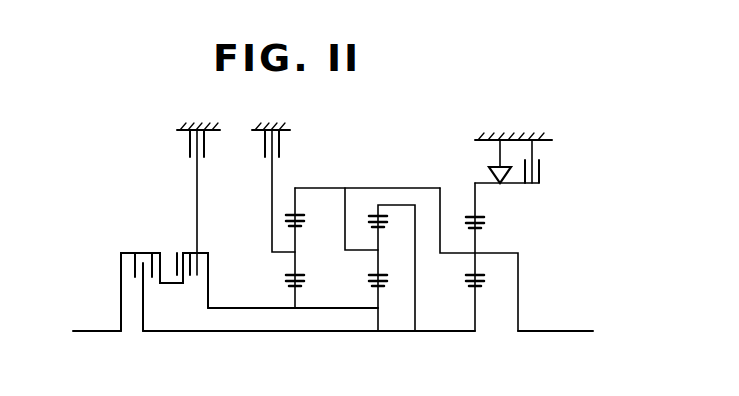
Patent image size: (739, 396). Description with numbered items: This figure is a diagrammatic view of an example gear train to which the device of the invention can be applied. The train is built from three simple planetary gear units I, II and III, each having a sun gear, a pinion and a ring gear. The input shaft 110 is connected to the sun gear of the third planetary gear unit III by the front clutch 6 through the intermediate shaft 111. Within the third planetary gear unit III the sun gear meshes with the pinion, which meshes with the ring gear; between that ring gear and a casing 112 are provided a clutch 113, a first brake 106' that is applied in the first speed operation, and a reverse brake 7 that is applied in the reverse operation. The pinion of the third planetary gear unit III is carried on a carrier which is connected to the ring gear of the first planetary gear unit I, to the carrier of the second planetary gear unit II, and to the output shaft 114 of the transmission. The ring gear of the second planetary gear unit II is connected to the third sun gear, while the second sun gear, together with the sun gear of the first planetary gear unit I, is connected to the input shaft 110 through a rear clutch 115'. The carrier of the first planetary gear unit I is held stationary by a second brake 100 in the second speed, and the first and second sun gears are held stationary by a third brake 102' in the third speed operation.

The front clutch 6 is at (140, 252).
The input shaft 110 is at (103, 331).
The rear clutch 115' is at (184, 287).
The third brake 102' is at (176, 199).
The second brake 100 is at (280, 144).
The intermediate shaft 111 is at (228, 333).
The casing 112 is at (518, 139).
The clutch 113 is at (490, 178).
The first brake 106' is at (576, 161).
The reverse brake 7 is at (545, 152).
The output shaft 114 is at (565, 331).
The first planetary gear unit I is at (324, 275).
The second planetary gear unit II is at (373, 284).
The third planetary gear unit III is at (478, 273).